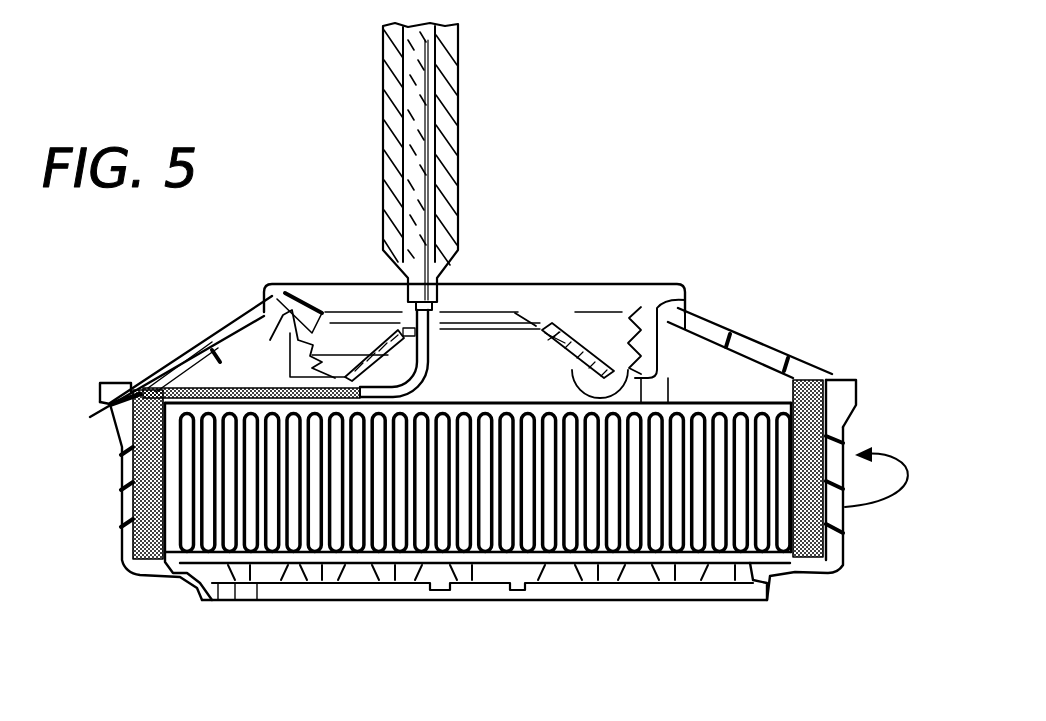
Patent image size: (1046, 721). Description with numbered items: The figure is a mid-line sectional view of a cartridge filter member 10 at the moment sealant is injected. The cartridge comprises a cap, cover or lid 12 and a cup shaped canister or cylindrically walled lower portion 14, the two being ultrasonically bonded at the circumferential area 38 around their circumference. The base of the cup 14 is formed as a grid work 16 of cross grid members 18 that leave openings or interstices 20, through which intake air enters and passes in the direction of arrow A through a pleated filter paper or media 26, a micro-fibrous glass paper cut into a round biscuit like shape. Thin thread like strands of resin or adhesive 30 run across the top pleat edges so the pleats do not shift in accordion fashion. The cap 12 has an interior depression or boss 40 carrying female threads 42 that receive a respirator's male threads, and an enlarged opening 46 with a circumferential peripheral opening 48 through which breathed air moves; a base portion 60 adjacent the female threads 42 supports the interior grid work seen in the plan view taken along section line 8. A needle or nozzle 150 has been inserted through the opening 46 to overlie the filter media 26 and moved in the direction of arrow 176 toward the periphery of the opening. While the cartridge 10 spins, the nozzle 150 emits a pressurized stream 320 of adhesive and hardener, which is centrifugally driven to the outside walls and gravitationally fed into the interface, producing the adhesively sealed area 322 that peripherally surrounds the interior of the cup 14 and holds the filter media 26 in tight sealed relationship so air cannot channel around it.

The section line 8— 8 is at (318, 152).
The cartridge filter member 10 is at (258, 628).
The cap, cover or lid 12 is at (252, 348).
The cup shaped canister or cylindrically walled lower portion 14 is at (177, 583).
The grid work 16 is at (413, 582).
The cross grid members 18 is at (591, 582).
The openings or interstices 20 is at (410, 572).
The pleated filter paper or media 26 is at (728, 405).
The resin or adhesive glue line 30 is at (676, 403).
The circumferential area 38 is at (836, 372).
The interior depression or boss 40 is at (606, 306).
The female threads 42 is at (330, 325).
The enlarged opening 46 is at (515, 313).
The circumferential peripheral opening 48 is at (372, 335).
The base portion 60 is at (585, 357).
The needle or nozzle 150 is at (446, 353).
The arrow 176 is at (570, 203).
The stream of sealant 320 is at (212, 380).
The adhesively sealed area 322 is at (123, 358).
The arrow A is at (481, 382).